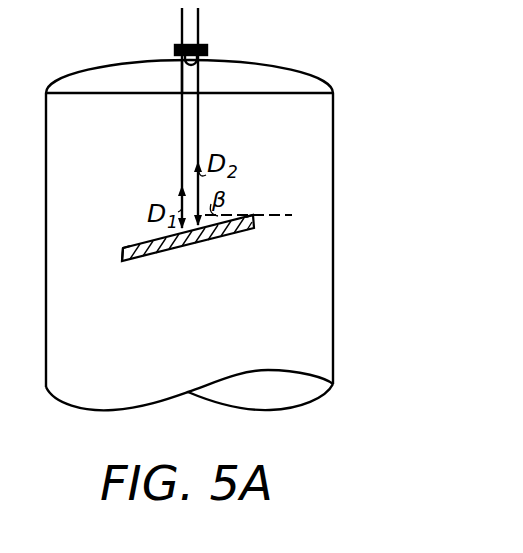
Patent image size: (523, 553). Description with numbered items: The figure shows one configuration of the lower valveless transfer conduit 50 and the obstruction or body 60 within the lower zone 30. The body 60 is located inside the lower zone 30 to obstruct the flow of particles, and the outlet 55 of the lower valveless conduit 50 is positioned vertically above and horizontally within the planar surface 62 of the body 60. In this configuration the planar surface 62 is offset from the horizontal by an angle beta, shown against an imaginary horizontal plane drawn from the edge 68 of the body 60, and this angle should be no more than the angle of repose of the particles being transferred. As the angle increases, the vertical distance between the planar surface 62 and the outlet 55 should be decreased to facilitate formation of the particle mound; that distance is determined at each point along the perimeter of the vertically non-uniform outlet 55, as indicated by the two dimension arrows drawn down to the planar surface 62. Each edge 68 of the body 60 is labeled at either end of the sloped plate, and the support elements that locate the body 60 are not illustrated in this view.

The lower zone 30 is at (334, 124).
The lower valveless conduit 50 is at (193, 27).
The outlet 55 is at (173, 165).
The body 60 is at (213, 233).
The planar surface 62 is at (115, 250).
The edges of deflector plate 68 is at (122, 247).